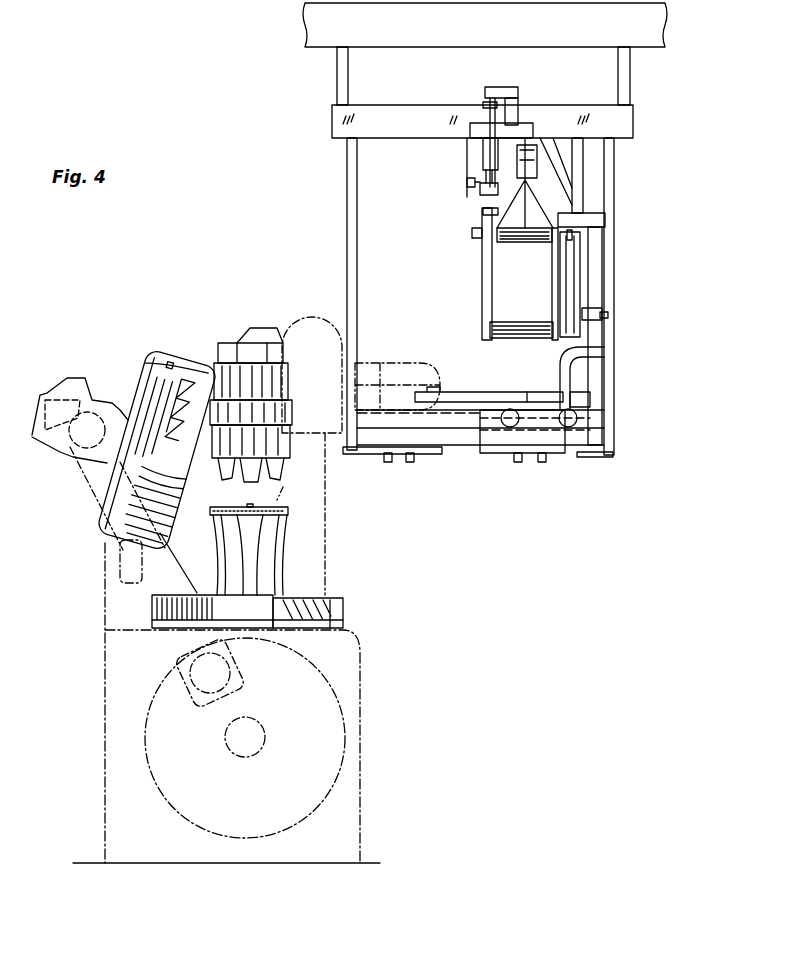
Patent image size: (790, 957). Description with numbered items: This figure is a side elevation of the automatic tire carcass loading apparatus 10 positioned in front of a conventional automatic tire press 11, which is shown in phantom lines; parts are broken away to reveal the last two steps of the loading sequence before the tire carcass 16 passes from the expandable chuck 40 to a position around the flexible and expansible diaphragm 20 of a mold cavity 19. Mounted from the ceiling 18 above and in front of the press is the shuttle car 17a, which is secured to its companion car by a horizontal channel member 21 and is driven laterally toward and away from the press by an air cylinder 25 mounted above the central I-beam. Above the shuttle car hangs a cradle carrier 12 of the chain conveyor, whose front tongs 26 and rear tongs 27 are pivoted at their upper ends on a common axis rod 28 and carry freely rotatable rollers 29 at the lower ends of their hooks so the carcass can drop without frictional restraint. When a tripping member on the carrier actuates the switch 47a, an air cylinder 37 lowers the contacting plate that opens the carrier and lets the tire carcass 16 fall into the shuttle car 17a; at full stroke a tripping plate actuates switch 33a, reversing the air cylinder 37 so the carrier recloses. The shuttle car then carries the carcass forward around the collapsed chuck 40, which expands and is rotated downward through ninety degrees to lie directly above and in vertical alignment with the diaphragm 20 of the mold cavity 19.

The ceiling 18 is at (657, 22).
The automatic tire carcass loading apparatus 10 is at (326, 227).
The air cylinder 37 is at (489, 107).
The switch 33a is at (470, 190).
The cradle carrier 12 is at (499, 287).
The front tongs 26 is at (480, 288).
The rear tongs 27 is at (553, 291).
The common axis rod 28 is at (528, 234).
The freely rotatable rollers 29 is at (528, 332).
The switch 47a is at (606, 317).
The air cylinder 25 is at (502, 393).
The shuttle car 17a is at (500, 448).
The horizontal channel member 21 is at (400, 463).
The tire carcass 16 is at (390, 372).
The expandable chuck 40 is at (231, 343).
The mold cavity 19 is at (185, 378).
The flexible and expansible diaphragm 20 is at (280, 533).
The automatic tire press 11 is at (80, 650).